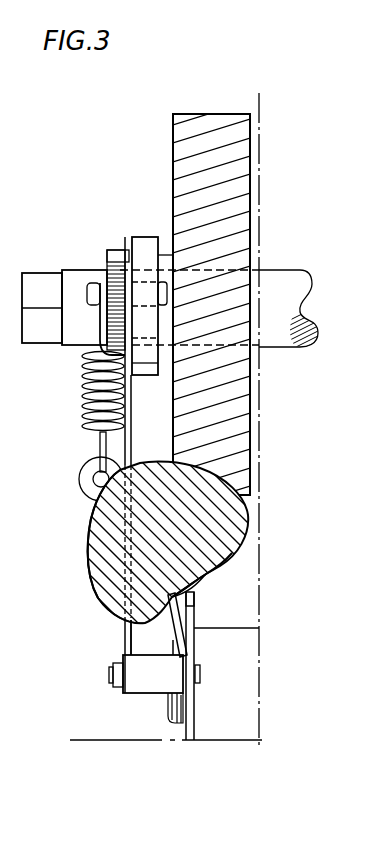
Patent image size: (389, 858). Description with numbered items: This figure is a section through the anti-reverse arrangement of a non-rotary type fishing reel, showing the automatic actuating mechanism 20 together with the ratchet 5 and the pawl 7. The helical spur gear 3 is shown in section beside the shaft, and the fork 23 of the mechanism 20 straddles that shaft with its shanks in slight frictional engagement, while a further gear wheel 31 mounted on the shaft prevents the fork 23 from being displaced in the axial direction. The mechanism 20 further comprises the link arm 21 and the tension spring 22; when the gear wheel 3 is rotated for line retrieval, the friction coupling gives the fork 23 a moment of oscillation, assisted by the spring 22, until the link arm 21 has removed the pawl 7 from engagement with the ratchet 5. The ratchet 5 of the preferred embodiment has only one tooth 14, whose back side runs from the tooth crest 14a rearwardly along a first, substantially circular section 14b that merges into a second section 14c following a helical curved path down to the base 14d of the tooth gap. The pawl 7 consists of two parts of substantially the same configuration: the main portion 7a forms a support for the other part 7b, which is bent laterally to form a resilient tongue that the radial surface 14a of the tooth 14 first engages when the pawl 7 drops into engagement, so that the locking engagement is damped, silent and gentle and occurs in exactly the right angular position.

The helical spur gear 3 is at (173, 141).
The ratchet 5 is at (250, 511).
The pawl 7 is at (198, 650).
The main portion of the pawl 7a is at (200, 604).
The resilient tongue 7b is at (190, 640).
The tooth 14 is at (100, 591).
The tooth crest 14a is at (131, 621).
The first section 14b is at (88, 535).
The second section 14c is at (202, 580).
The base of the tooth gap 14d is at (222, 573).
The automatic actuating mechanism 20 is at (124, 432).
The link arm 21 is at (100, 447).
The tension spring 22 is at (84, 380).
The fork 23 is at (143, 243).
The further gear wheel 31 is at (115, 250).